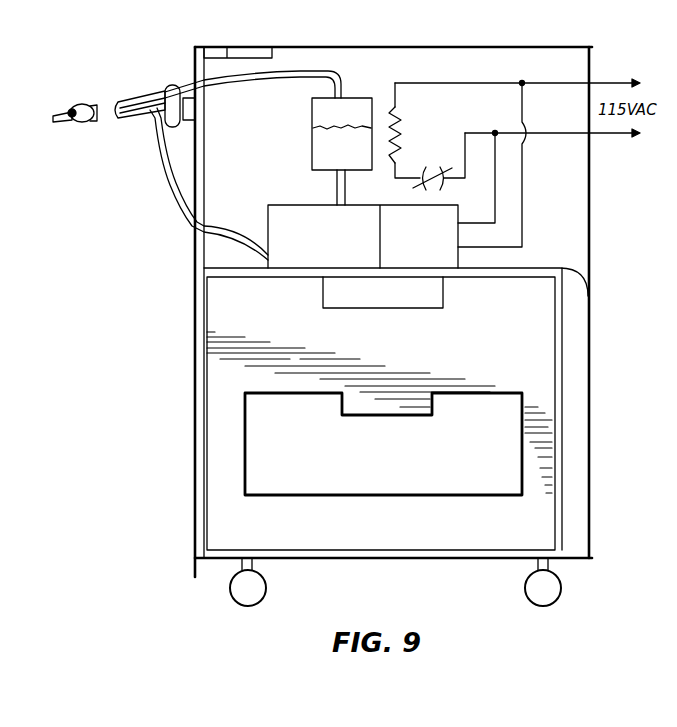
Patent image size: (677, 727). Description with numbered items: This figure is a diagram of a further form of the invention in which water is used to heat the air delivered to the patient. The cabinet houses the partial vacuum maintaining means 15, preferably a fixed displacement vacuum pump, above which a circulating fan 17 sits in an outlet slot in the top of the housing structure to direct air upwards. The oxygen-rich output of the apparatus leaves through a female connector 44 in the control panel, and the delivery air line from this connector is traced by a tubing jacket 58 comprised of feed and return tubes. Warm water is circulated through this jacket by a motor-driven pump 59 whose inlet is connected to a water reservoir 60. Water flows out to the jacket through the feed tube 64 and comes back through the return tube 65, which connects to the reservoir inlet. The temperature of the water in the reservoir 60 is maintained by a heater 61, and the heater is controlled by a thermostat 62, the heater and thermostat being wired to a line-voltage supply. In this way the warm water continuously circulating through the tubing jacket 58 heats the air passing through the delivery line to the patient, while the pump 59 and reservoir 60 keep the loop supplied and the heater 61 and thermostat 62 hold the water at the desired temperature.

The partial vacuum maintaining means 15 is at (477, 393).
The circulating fan 17 is at (330, 306).
The female connector 44 is at (190, 108).
The tubing jacket 58 is at (66, 110).
The motor-driven pump 59 is at (284, 210).
The water reservoir 60 is at (350, 97).
The heater 61 is at (398, 133).
The thermostat 62 is at (428, 168).
The feed tube 64 is at (158, 150).
The return tube 65 is at (300, 72).